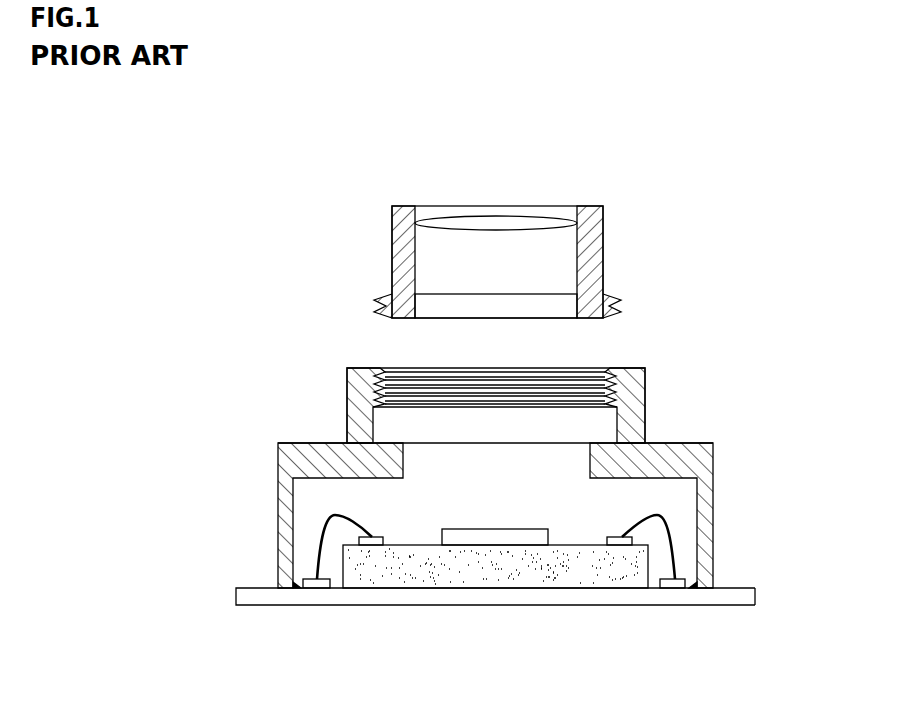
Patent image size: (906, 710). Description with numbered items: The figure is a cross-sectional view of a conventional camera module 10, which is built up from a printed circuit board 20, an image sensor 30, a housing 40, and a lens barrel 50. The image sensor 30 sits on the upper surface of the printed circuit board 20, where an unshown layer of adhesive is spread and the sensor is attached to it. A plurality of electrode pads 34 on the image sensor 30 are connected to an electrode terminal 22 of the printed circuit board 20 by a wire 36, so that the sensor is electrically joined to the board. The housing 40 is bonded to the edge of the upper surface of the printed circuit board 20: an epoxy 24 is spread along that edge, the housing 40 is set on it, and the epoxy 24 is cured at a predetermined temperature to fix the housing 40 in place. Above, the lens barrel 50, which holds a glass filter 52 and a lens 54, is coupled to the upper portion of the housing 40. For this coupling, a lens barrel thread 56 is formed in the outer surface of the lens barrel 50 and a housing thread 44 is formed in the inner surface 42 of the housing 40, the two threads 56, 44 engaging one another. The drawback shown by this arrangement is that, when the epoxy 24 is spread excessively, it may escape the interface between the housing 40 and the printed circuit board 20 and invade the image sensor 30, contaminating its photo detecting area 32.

The camera module 10 is at (795, 148).
The printed circuit board 20 is at (236, 595).
The electrode terminal 22 is at (673, 582).
The epoxy 24 is at (707, 590).
The image sensor 30 is at (343, 565).
The photo detecting area 32 is at (497, 540).
The electrode pads 34 is at (622, 546).
The wire 36 is at (676, 528).
The housing 40 is at (283, 458).
The inner surface 42 is at (608, 420).
The housing thread 44 is at (610, 370).
The lens barrel 50 is at (395, 257).
The glass filter 52 is at (556, 303).
The lens 54 is at (494, 220).
The lens barrel thread 56 is at (373, 300).